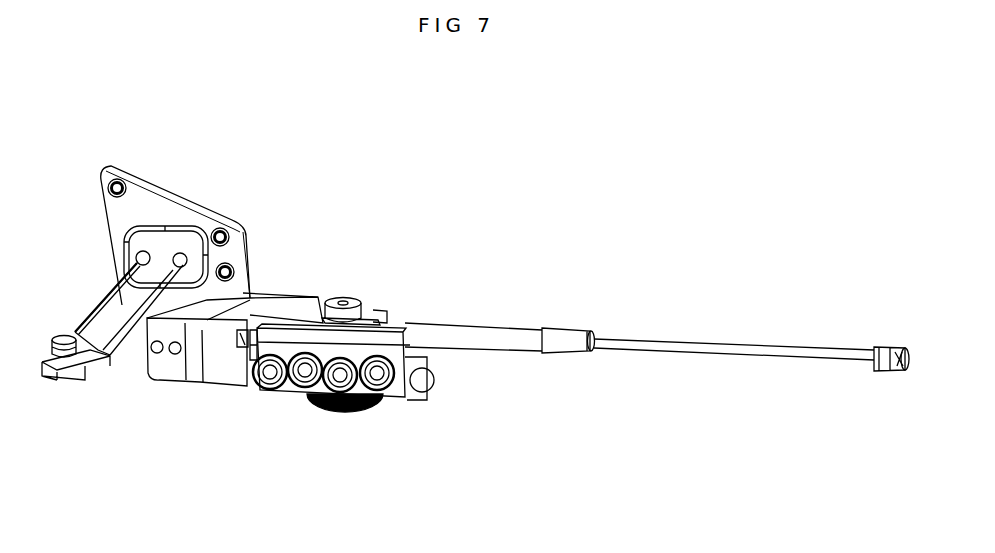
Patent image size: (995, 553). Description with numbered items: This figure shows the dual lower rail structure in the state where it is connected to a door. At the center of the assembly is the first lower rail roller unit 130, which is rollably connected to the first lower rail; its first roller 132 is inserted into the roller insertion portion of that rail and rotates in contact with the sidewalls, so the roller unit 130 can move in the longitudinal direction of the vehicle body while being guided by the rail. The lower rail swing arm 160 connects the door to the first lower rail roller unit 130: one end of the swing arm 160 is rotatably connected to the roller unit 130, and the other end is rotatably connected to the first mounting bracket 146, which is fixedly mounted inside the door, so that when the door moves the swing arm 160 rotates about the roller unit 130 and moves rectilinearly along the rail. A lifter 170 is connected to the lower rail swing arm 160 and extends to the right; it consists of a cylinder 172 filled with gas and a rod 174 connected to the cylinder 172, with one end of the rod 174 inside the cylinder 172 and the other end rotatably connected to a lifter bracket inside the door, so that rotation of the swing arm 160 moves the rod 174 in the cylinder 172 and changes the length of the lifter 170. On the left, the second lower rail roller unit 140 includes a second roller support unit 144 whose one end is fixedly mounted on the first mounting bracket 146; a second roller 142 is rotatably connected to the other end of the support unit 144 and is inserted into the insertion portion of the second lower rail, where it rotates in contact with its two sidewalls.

The first lower rail roller unit 130 is at (408, 413).
The first roller 132 is at (306, 378).
The second lower rail roller unit 140 is at (66, 386).
The second roller 142 is at (64, 336).
The second roller support unit 144 is at (110, 350).
The first mounting bracket 146 is at (175, 199).
The lower rail swing arm 160 is at (207, 307).
The lifter 170 is at (631, 290).
The cylinder 172 is at (468, 330).
The rod 174 is at (767, 350).